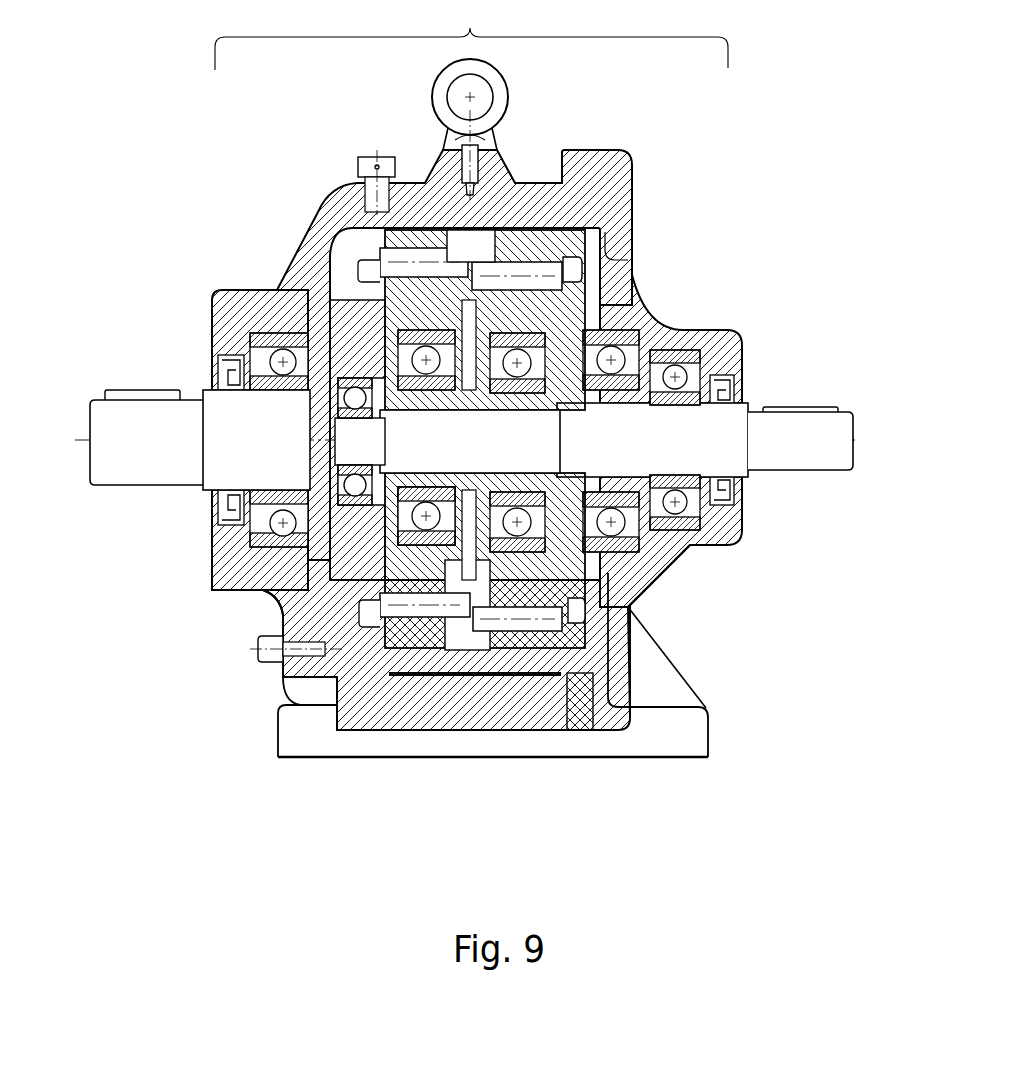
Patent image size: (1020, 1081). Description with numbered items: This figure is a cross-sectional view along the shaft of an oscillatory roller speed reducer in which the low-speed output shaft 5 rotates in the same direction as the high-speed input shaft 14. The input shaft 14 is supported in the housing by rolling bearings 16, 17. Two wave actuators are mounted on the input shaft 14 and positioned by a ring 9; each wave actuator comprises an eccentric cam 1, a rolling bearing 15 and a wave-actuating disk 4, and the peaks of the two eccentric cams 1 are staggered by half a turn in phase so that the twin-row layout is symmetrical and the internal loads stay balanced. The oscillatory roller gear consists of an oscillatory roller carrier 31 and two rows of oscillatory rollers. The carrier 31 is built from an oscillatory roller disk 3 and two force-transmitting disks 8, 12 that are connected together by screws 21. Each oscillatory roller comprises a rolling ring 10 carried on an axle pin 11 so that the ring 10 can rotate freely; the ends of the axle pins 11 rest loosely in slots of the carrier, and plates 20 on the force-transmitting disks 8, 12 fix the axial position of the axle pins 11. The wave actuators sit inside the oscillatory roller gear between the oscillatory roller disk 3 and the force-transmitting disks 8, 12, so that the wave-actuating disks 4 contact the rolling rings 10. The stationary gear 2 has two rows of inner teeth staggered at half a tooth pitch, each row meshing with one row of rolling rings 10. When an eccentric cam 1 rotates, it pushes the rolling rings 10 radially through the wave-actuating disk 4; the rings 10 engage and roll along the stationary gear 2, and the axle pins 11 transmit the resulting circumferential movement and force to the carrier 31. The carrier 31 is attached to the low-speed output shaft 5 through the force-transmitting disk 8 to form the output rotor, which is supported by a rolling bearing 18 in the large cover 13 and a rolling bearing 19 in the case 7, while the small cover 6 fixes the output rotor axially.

The eccentric cam 1 is at (560, 647).
The stationary gear 2 is at (518, 658).
The oscillatory roller disk 3 is at (470, 325).
The wave-actuating disk 4 is at (500, 570).
The low-speed output shaft 5 is at (230, 420).
The small cover 6 is at (245, 323).
The case 7 is at (293, 318).
The force-transmitting disk 8 is at (335, 232).
The ring 9 is at (360, 180).
The rolling ring 10 is at (513, 247).
The axle pin 11 is at (540, 273).
The force-transmitting disk 12 is at (633, 217).
The large cover 13 is at (640, 327).
The high-speed input shaft 14 is at (665, 438).
The rolling bearing 15 is at (428, 540).
The rolling bearing 16 is at (703, 530).
The rolling bearing 17 is at (262, 590).
The rolling bearing 18 is at (640, 552).
The rolling bearing 19 is at (212, 587).
The plate 20 is at (360, 618).
The screw 21 is at (278, 677).
The oscillatory roller carrier 31 is at (471, 35).